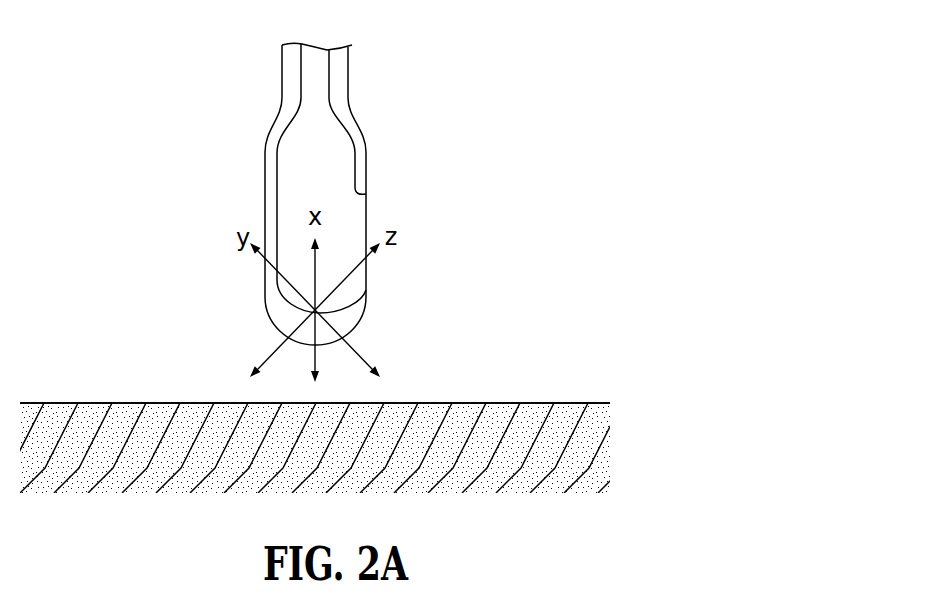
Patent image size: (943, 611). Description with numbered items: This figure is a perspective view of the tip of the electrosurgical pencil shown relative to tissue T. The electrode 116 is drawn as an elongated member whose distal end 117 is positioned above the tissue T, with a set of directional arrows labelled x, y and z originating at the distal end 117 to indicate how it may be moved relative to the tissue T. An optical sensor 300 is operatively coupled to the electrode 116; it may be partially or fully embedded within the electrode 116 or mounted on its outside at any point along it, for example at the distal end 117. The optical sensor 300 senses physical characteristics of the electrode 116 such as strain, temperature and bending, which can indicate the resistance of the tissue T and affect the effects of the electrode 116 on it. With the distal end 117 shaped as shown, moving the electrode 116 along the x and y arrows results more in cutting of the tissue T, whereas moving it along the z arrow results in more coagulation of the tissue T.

The electrode 116 is at (327, 184).
The optical sensor 300 is at (338, 105).
The distal end 117 is at (271, 285).
The tissue T is at (528, 402).